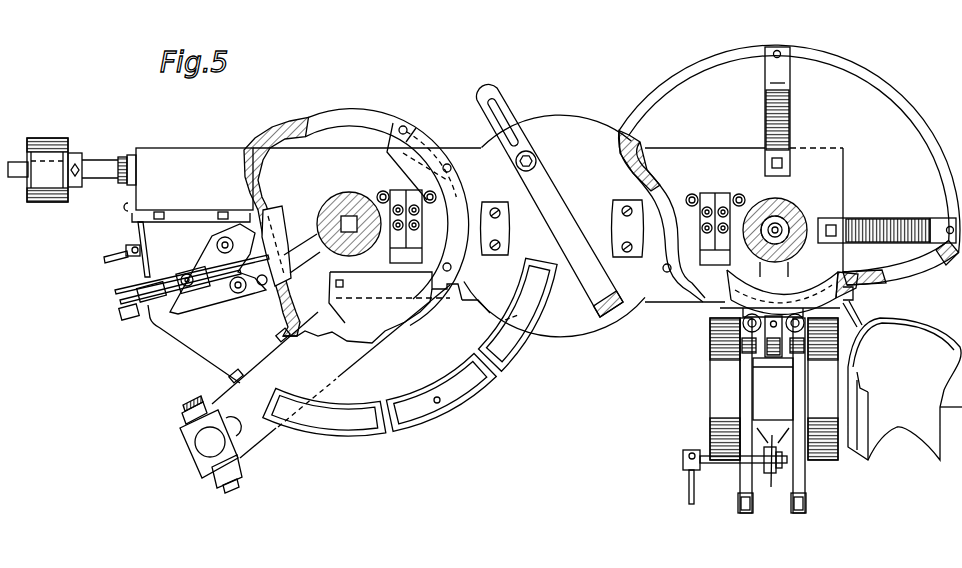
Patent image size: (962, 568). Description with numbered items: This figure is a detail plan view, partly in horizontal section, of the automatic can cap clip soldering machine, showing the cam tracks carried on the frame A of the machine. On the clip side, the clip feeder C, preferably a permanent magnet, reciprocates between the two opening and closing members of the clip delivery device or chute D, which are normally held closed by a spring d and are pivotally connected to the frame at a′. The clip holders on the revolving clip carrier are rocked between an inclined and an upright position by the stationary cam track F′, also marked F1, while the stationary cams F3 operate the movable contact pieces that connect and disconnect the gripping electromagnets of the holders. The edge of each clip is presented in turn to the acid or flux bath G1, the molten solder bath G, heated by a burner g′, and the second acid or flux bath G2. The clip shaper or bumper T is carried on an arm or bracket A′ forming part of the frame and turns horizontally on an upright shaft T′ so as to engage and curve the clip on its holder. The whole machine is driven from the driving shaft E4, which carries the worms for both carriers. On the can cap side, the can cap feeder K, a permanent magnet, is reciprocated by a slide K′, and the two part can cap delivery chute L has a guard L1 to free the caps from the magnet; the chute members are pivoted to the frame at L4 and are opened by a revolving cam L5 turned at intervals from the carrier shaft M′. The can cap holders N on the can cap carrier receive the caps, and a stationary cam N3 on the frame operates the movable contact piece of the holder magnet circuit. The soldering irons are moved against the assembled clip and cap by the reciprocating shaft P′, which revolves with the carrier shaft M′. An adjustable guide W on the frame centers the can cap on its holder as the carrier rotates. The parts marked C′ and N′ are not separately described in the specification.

The driving shaft E4 is at (103, 158).
The stationary cam track F′ is at (340, 110).
The stationary cams F3 is at (390, 160).
The frame A is at (806, 194).
The pin C′ is at (110, 258).
The clip delivery device D is at (117, 290).
The clip feeder C is at (127, 303).
The spring d is at (219, 262).
The pivot a′ is at (239, 294).
The arm or bracket A′ is at (331, 371).
The upright shaft T′ is at (207, 443).
The clip shaper or bumper T is at (231, 489).
The acid or flux bath G1 is at (343, 425).
The molten solder bath G is at (420, 413).
The second acid or flux bath G2 is at (509, 353).
The burner g′ is at (439, 404).
The stationary cam track F1 is at (372, 337).
The adjustable guide W is at (602, 318).
The stationary cam N3 is at (733, 310).
The revolving cam L5 is at (750, 338).
The can cap delivery device or chute L is at (797, 385).
The pivot L4 is at (805, 327).
The guard L1 is at (800, 487).
The can cap feeder K is at (771, 487).
The slide K′ is at (691, 500).
The can cap holders N is at (885, 276).
The arc band N′ is at (895, 92).
The carrier shaft M′ is at (777, 228).
The reciprocating shaft P′ is at (822, 212).